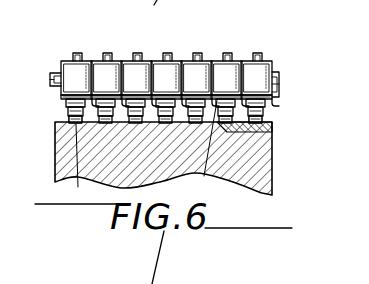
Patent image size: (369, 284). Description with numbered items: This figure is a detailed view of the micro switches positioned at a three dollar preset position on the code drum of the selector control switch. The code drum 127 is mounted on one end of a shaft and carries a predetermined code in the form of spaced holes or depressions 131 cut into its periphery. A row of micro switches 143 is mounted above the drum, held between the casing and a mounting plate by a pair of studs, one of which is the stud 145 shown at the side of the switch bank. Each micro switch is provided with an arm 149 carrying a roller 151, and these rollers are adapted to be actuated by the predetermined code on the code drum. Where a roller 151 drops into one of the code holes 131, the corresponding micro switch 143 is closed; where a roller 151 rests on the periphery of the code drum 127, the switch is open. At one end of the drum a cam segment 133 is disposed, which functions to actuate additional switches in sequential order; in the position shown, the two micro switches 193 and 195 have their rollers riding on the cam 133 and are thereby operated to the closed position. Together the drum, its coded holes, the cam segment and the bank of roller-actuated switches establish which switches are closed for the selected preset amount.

The code drum 127 is at (273, 190).
The code holes 131 is at (82, 163).
The cam segment 133 is at (270, 130).
The micro switches 143 is at (192, 67).
The stud 145 is at (279, 81).
The arms 149 is at (207, 148).
The rollers 151 is at (62, 116).
The micro switch 193 is at (227, 72).
The micro switch 195 is at (263, 70).